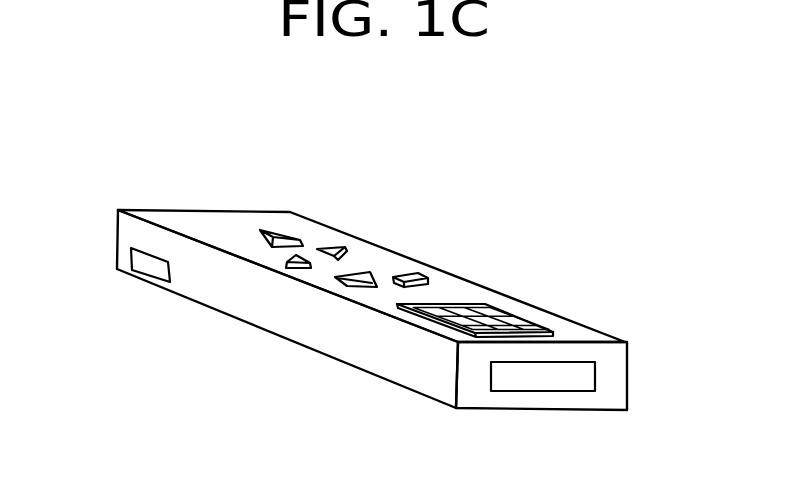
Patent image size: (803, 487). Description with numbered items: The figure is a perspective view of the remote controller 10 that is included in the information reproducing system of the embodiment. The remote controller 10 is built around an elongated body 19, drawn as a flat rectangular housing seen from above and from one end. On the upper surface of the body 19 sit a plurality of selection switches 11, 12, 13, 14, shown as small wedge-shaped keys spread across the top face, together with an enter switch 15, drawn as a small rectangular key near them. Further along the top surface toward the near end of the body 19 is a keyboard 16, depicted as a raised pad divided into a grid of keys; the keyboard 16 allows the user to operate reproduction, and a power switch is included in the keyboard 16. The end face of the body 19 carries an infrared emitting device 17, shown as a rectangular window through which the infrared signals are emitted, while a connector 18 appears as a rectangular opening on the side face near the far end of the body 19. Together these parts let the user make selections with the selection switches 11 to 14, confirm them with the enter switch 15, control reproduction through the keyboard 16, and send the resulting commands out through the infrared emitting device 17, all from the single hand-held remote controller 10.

The remote controller 10 is at (531, 248).
The selection switch 11 is at (263, 230).
The selection switch 12 is at (346, 247).
The selection switch 13 is at (289, 263).
The selection switch 14 is at (373, 270).
The enter switch 15 is at (421, 273).
The keyboard 16 is at (512, 311).
The infrared emitting device 17 is at (590, 377).
The connector 18 is at (128, 262).
The body 19 is at (597, 332).